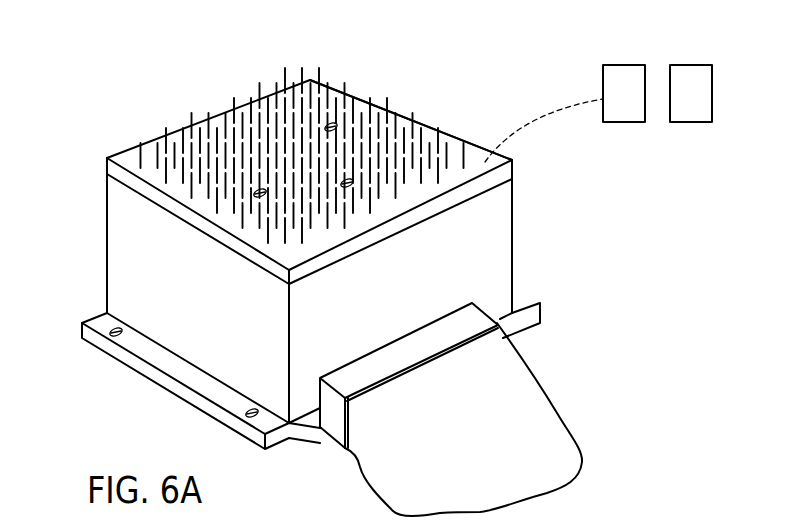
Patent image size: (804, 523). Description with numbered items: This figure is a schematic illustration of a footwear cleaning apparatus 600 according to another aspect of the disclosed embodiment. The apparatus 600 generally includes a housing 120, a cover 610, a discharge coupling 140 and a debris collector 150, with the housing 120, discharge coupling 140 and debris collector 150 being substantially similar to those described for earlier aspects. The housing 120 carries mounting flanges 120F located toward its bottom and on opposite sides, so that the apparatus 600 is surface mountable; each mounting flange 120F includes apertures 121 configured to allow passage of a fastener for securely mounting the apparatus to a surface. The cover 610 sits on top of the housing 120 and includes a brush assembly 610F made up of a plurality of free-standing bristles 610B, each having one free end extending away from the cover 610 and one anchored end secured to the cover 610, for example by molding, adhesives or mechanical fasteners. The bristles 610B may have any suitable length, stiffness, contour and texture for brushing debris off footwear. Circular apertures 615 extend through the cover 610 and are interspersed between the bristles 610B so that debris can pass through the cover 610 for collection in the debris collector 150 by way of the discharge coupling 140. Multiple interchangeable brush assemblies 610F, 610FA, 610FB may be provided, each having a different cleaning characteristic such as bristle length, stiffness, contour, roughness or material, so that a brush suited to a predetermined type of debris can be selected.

The footwear cleaning apparatus 600 is at (521, 58).
The housing 120 is at (507, 225).
The mounting flange 120F is at (110, 340).
The aperture 121 is at (243, 417).
The discharge coupling 140 is at (485, 307).
The debris collector 150 is at (577, 445).
The cover 610 is at (107, 165).
The brush assembly 610F is at (249, 70).
The free-standing bristles 610B is at (367, 90).
The interchangeable brush assembly 610FA is at (622, 65).
The interchangeable brush assembly 610FB is at (690, 122).
The apertures 615 is at (326, 123).